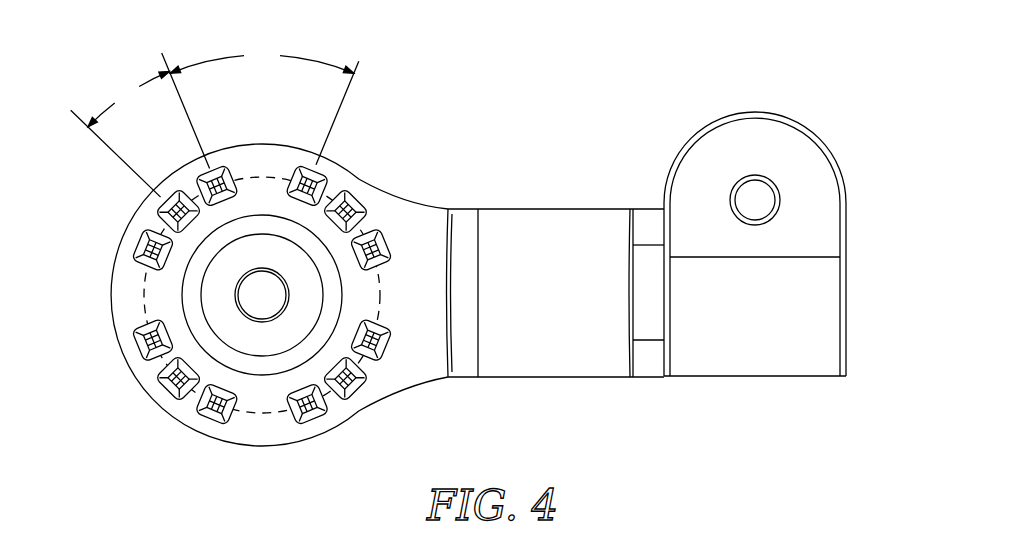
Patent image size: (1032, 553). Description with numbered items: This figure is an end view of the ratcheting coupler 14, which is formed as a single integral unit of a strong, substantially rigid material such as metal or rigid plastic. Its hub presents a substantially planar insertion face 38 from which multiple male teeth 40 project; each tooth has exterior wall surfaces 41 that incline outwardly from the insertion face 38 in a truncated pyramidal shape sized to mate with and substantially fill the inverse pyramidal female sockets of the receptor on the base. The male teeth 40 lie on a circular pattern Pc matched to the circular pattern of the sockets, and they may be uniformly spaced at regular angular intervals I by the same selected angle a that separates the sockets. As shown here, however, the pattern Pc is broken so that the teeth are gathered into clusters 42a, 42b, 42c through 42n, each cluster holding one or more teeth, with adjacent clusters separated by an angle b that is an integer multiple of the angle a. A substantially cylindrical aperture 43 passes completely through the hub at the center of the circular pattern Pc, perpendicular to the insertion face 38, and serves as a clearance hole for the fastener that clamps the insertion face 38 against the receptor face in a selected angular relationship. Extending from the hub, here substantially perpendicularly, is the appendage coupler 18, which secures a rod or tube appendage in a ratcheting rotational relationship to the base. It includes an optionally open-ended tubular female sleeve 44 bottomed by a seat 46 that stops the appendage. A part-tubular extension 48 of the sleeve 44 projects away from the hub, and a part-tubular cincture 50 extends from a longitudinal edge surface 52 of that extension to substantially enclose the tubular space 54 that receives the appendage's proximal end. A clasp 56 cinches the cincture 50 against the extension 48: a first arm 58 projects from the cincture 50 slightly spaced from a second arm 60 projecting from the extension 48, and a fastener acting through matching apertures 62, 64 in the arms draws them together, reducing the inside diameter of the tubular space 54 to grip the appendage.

The ratcheting coupler 14 is at (789, 53).
The appendage coupler 18 is at (590, 166).
The insertion face 38 is at (256, 160).
The male teeth 40 is at (240, 287).
The exterior wall surfaces 41 is at (143, 255).
The cluster 42a is at (149, 213).
The cluster 42b is at (137, 408).
The cluster 42c is at (378, 413).
The cluster 42n is at (380, 170).
The cylindrical aperture 43 is at (262, 297).
The tubular female sleeve 44 is at (542, 353).
The seat 46 is at (457, 308).
The part-tubular extension 48 is at (651, 219).
The part-tubular cincture 50 is at (765, 335).
The longitudinal edge surface 52 is at (645, 362).
The tubular space 54 is at (856, 292).
The clasp 56 is at (723, 100).
The first arm 58 is at (783, 137).
The second arm 60 is at (827, 143).
The aperture 62 is at (777, 187).
The aperture 64 is at (760, 203).
The regular angular intervals I is at (190, 192).
The angle a is at (140, 125).
The angle b is at (264, 107).
The circular pattern Pc is at (142, 297).